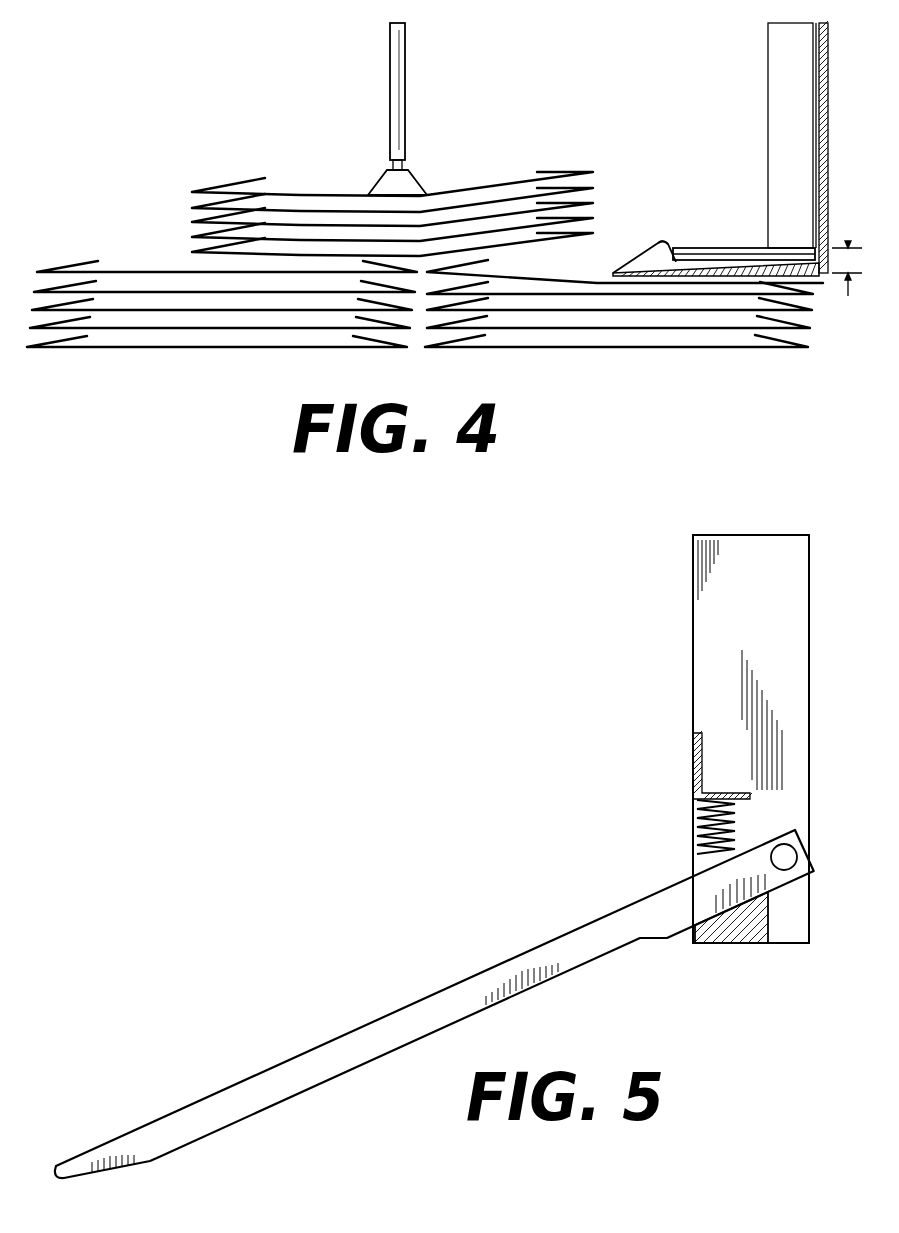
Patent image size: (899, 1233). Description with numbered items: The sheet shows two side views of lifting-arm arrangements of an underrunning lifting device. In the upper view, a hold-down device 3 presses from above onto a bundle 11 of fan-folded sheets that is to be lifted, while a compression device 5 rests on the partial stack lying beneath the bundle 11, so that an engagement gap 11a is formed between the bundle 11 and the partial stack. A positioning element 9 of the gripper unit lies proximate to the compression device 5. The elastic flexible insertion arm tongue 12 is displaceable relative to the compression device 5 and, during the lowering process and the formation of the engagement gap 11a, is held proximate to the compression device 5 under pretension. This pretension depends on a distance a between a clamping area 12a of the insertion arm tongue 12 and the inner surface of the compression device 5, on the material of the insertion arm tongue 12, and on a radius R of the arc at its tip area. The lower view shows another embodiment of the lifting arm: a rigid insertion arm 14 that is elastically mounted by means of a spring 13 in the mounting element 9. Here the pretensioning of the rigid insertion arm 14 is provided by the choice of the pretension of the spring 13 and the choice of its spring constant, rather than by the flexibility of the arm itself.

In FIG. 4, the hold-down device 3 is at (405, 76).
In FIG. 4, the compression device 5 is at (829, 104).
In FIG. 4, the positioning element 9 is at (787, 82).
In FIG. 5, the positioning element 9 is at (715, 660).
In FIG. 4, the bundle 11 is at (522, 188).
In FIG. 4, the engagement gap 11a is at (557, 263).
In FIG. 4, the insertion arm tongue 12 is at (658, 240).
In FIG. 4, the clamping area 12a is at (735, 250).
In FIG. 4, the radius of tip area arc R is at (667, 243).
In FIG. 4, the distance a is at (847, 258).
In FIG. 5, the spring 13 is at (700, 826).
In FIG. 5, the rigid insertion arm 14 is at (388, 1020).